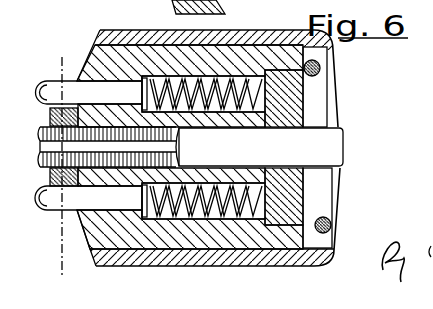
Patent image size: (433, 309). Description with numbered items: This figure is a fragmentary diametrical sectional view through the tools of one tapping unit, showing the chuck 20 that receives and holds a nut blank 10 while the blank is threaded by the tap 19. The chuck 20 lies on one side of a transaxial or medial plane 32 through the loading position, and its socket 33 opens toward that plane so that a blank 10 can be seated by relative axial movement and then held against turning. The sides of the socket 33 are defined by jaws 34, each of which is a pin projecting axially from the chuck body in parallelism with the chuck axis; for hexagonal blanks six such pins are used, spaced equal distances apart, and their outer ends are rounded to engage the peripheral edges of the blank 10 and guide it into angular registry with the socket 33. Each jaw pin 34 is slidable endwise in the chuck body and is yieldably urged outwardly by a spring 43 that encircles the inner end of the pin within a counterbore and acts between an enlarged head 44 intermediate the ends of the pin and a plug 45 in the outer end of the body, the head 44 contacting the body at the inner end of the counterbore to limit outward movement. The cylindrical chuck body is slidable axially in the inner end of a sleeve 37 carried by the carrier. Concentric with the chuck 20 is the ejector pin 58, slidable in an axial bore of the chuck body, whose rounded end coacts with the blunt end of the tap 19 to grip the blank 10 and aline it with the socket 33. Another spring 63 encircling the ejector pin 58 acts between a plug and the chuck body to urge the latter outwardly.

The nut blank 10 is at (46, 113).
The tap 19 is at (36, 160).
The chuck 20 is at (75, 50).
The transaxial or medial plane 32 is at (60, 258).
The socket 33 is at (44, 175).
The jaws 34 is at (42, 84).
The sleeve 37 is at (277, 27).
The spring 43 is at (242, 108).
The enlarged head 44 is at (141, 96).
The plug 45 is at (338, 102).
The ejector pin 58 is at (336, 141).
The spring 63 is at (320, 69).